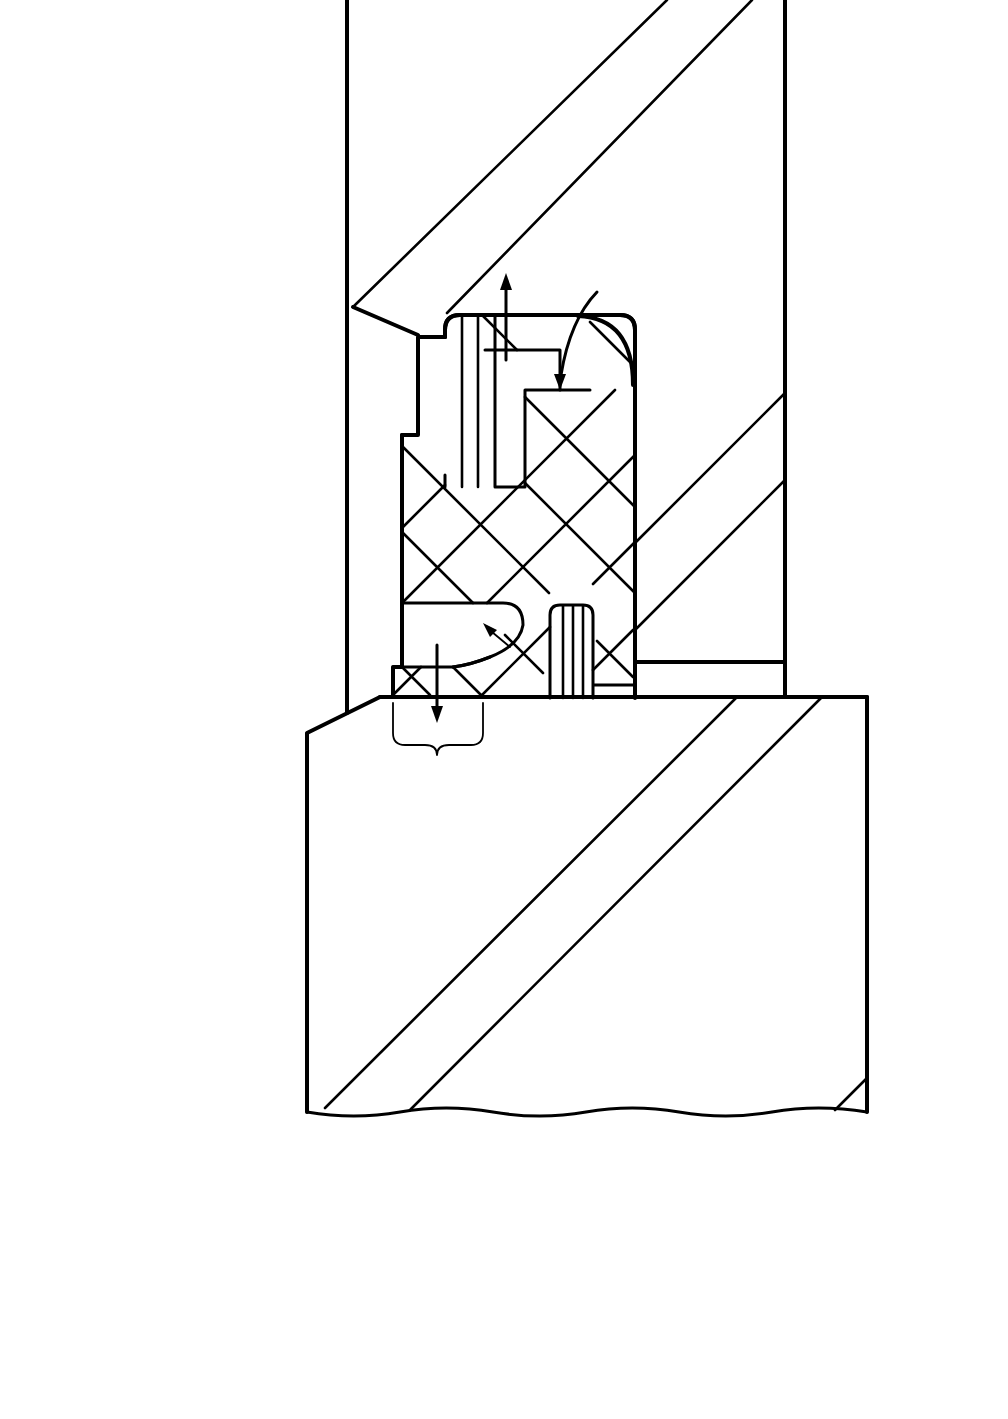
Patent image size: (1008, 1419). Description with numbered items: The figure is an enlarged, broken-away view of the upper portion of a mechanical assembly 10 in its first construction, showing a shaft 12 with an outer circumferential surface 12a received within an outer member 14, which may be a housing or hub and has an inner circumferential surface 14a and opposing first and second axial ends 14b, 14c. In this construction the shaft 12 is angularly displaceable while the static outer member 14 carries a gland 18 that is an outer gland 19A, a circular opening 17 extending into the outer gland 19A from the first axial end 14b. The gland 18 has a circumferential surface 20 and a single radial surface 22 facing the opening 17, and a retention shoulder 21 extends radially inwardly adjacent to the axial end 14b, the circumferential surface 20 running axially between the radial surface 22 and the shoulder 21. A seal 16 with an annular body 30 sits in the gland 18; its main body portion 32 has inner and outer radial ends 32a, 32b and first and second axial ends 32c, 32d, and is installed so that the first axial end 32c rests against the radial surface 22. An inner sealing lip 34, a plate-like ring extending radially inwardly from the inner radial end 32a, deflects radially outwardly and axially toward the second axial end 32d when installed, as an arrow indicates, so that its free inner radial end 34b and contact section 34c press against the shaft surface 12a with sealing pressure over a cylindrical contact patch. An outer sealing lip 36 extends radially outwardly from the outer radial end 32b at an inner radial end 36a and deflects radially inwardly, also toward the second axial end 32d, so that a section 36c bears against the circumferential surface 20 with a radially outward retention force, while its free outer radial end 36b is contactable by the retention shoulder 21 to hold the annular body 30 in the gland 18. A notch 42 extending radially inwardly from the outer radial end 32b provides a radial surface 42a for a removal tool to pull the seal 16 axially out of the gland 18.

The mechanical assembly 10 is at (101, 590).
The shaft 12 is at (214, 941).
The outer circumferential surface 12a is at (840, 697).
The outer member 14 is at (286, 146).
The inner circumferential surface 14a is at (698, 667).
The first axial end 14b is at (345, 192).
The second axial end 14c is at (790, 183).
The seal 16 is at (361, 533).
The circular opening 17 is at (345, 447).
The gland 18 is at (368, 379).
The outer gland 19A is at (413, 365).
The circumferential surface 20 is at (622, 317).
The retention shoulder 21 is at (413, 347).
The radial surface 22 is at (637, 520).
The annular body 30 is at (376, 489).
The main body portion 32 is at (394, 573).
The inner radial end 32a is at (423, 610).
The outer radial end 32b is at (552, 383).
The first axial end 32c is at (637, 448).
The second axial end 32d is at (413, 498).
The inner sealing lip 34 is at (518, 711).
The inner radial end 34b is at (393, 676).
The contact section 34c is at (453, 668).
The outer sealing lip 36 is at (553, 297).
The inner radial end 36a is at (615, 385).
The outer radial end 36b is at (438, 320).
The section 36c is at (537, 320).
The notch 42 is at (495, 473).
The radial surface 42a is at (450, 453).